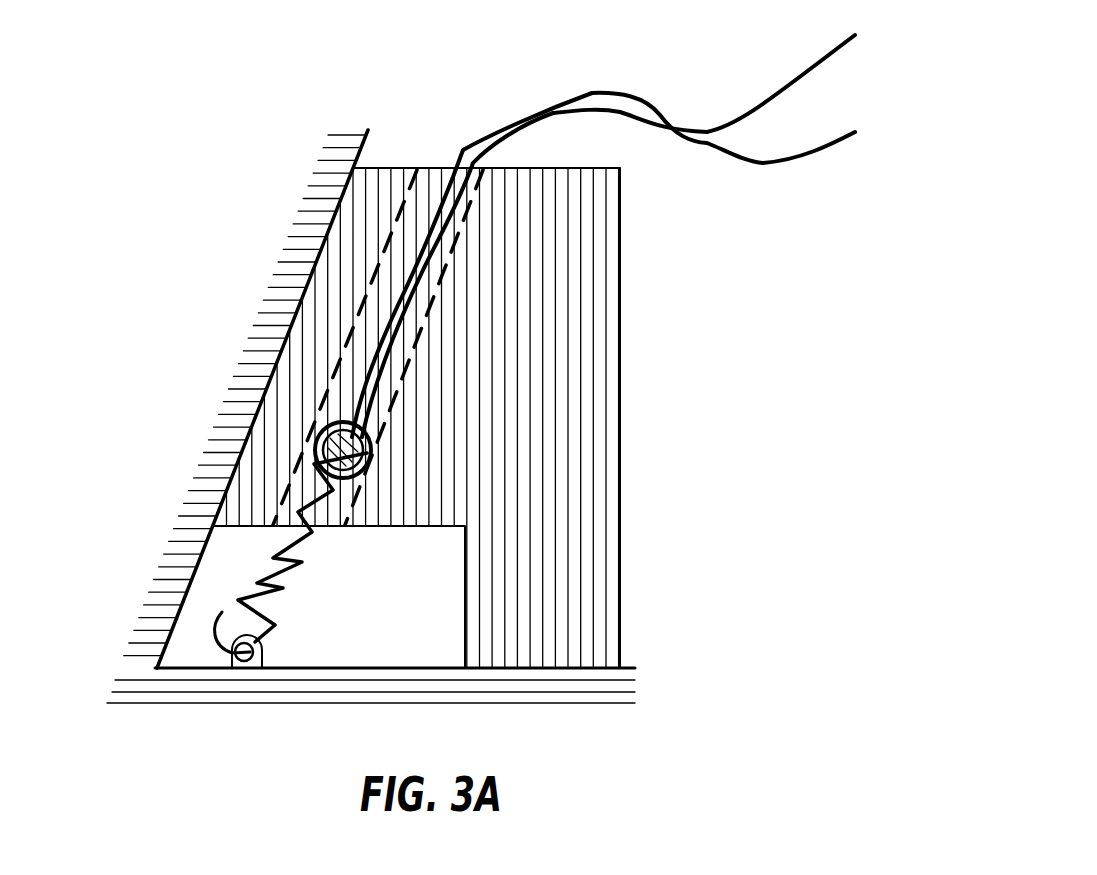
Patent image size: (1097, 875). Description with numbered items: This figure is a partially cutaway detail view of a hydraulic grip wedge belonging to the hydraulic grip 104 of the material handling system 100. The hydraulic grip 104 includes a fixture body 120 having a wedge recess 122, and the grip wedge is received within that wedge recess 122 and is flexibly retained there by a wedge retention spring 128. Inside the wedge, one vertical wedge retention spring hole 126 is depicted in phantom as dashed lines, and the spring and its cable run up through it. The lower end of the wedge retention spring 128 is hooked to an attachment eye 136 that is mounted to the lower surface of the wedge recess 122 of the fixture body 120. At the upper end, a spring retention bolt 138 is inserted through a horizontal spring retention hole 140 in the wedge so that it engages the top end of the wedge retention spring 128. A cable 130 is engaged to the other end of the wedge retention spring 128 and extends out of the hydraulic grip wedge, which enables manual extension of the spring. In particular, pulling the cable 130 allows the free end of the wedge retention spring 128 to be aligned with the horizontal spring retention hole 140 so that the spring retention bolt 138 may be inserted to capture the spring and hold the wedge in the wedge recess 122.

The material handling system 100 is at (98, 108).
The hydraulic grip 104 is at (288, 181).
The fixture body 120 is at (285, 238).
The wedge recess 122 is at (402, 670).
The vertical wedge retention spring hole 126 is at (410, 188).
The wedge retention spring 128 is at (272, 567).
The cable 130 is at (654, 103).
The attachment eye 136 is at (220, 660).
The spring retention bolt 138 is at (350, 425).
The horizontal spring retention hole 140 is at (325, 452).